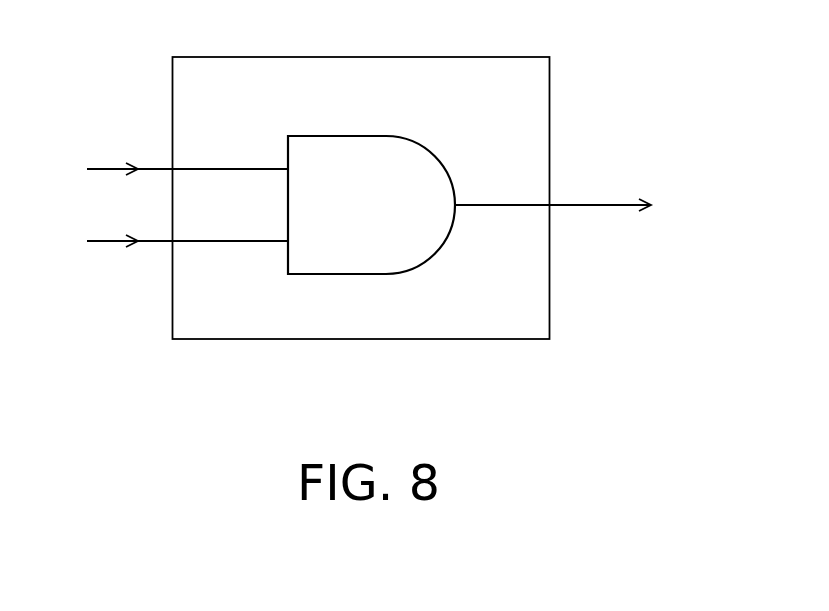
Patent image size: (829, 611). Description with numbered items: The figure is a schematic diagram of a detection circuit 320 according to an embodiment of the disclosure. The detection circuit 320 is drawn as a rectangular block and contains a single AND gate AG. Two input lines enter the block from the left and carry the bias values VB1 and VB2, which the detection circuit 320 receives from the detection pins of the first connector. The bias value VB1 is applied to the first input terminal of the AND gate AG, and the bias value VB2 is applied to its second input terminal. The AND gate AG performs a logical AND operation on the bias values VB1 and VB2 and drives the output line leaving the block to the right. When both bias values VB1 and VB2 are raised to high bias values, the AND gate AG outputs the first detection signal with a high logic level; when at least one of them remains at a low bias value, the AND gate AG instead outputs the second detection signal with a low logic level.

The detection circuit 320 is at (550, 92).
The AND gate AG is at (442, 161).
The bias value VB1 is at (160, 170).
The bias value VB2 is at (160, 241).